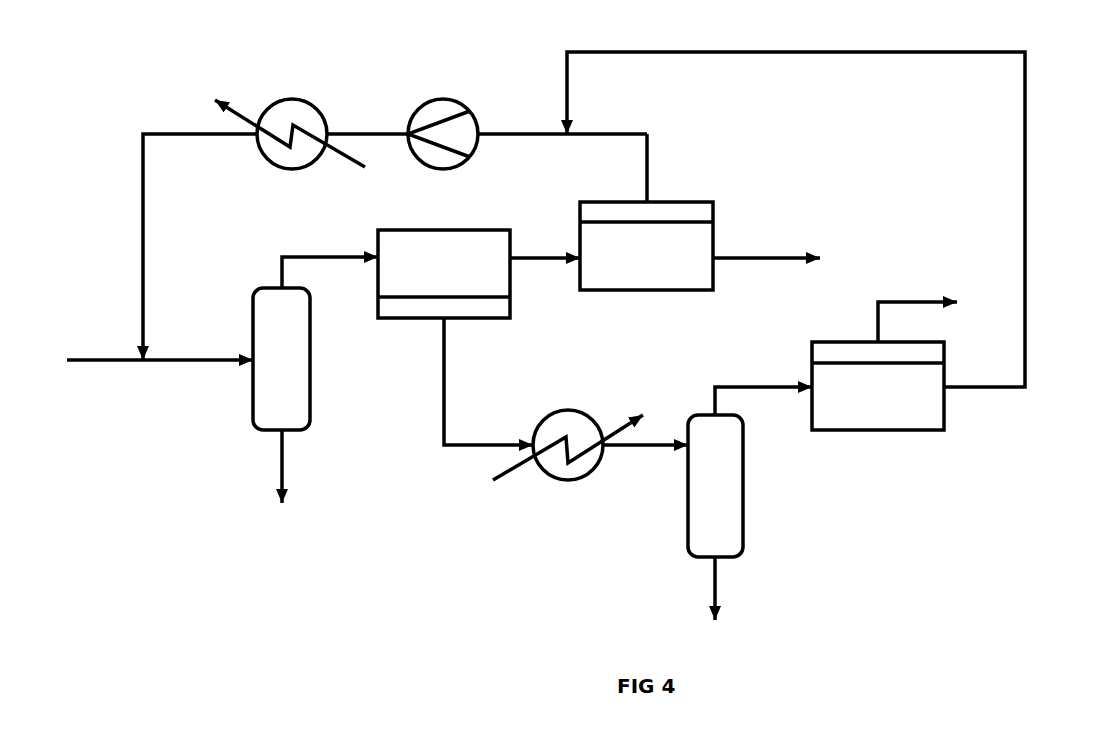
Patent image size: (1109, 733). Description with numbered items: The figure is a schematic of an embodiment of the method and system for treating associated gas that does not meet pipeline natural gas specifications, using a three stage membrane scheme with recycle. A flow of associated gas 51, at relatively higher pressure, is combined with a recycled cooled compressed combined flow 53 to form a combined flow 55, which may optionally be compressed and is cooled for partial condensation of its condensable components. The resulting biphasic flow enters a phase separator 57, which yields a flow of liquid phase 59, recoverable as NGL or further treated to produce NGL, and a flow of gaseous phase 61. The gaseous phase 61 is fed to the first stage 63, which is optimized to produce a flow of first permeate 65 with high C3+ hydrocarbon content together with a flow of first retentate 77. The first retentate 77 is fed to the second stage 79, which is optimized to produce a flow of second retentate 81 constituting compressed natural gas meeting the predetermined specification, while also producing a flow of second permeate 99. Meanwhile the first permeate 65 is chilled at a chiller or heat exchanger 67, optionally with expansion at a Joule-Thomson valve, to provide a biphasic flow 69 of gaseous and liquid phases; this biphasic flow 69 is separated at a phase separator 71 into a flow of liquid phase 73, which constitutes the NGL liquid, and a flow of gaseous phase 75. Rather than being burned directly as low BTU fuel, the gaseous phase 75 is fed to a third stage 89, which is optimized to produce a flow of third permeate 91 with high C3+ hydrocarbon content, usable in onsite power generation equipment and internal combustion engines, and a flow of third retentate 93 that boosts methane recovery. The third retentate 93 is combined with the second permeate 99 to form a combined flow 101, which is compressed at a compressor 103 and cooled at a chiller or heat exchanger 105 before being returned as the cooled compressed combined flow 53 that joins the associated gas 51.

The flow of associated gas 51 is at (100, 362).
The cooled compressed combined flow 53 is at (143, 205).
The combined flow 55 is at (187, 362).
The phase separator 57 is at (285, 340).
The flow of liquid phase 59 is at (287, 472).
The flow of gaseous phase 61 is at (330, 256).
The first stage 63 is at (454, 258).
The flow of first permeate 65 is at (446, 353).
The chiller or heat exchanger 67 is at (558, 470).
The biphasic flow 69 is at (650, 445).
The phase separator 71 is at (727, 474).
The flow of liquid phase 73 is at (720, 590).
The flow of gaseous phase 75 is at (745, 386).
The flow of first retentate 77 is at (548, 257).
The second stage 79 is at (668, 245).
The flow of second retentate 81 is at (775, 258).
The third stage 89 is at (868, 402).
The flow of third permeate 91 is at (898, 300).
The flow of third retentate 93 is at (1025, 170).
The flow of second permeate 99 is at (648, 152).
The combined flow 101 is at (529, 134).
The compressor 103 is at (458, 128).
The chiller or heat exchanger 105 is at (290, 118).